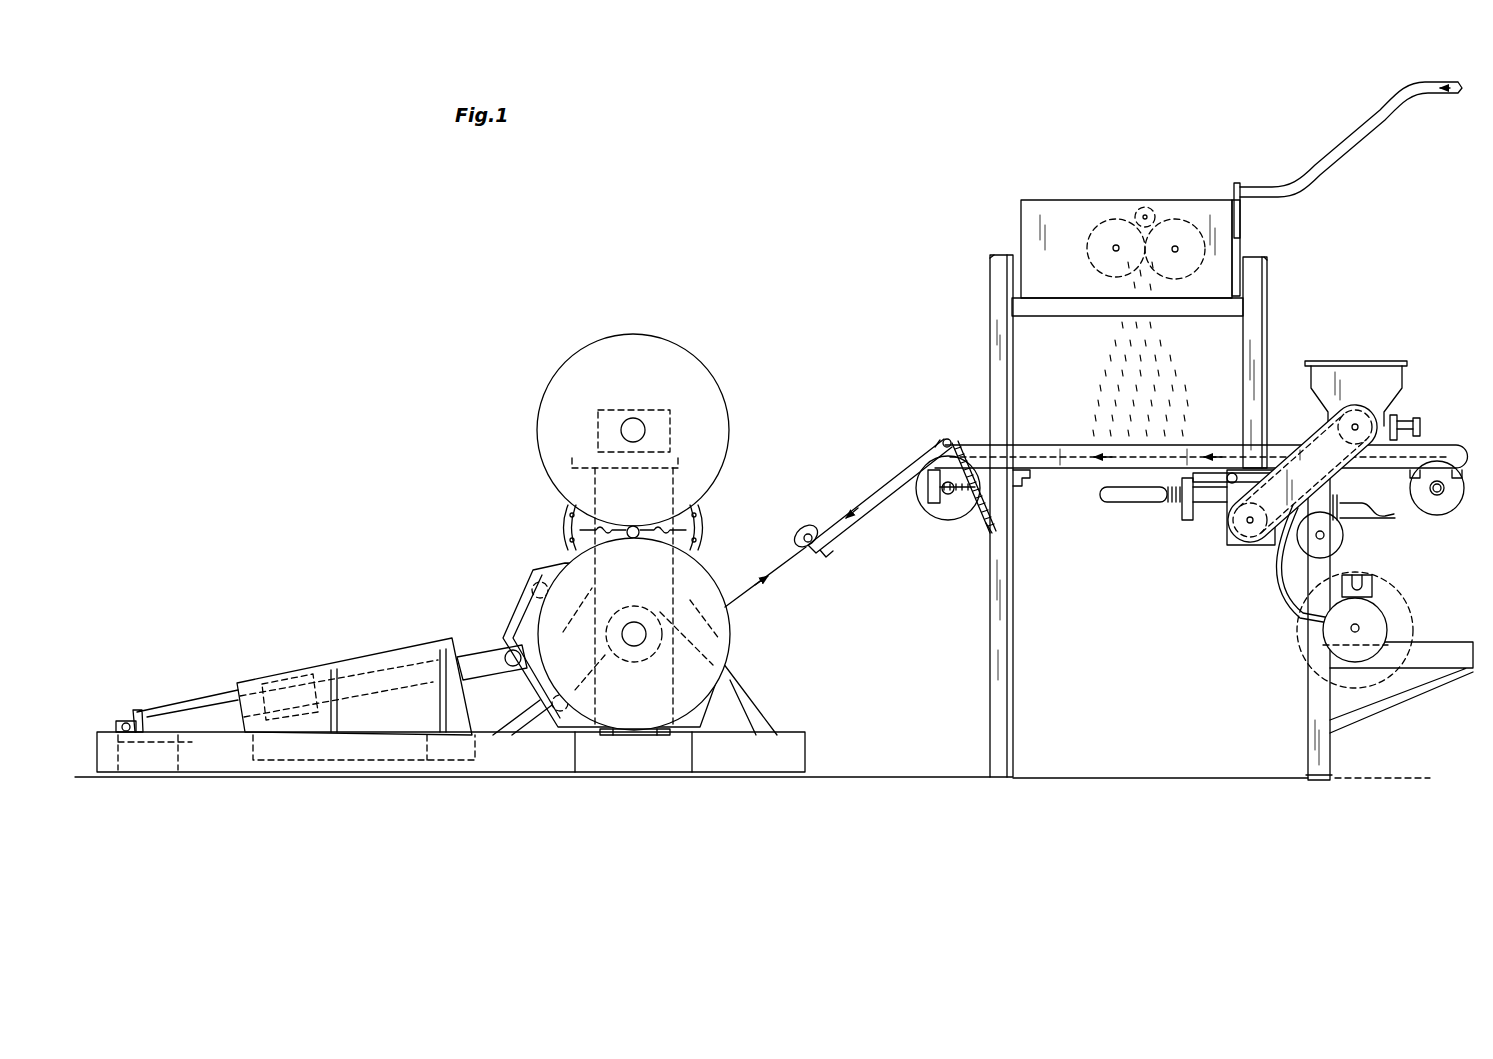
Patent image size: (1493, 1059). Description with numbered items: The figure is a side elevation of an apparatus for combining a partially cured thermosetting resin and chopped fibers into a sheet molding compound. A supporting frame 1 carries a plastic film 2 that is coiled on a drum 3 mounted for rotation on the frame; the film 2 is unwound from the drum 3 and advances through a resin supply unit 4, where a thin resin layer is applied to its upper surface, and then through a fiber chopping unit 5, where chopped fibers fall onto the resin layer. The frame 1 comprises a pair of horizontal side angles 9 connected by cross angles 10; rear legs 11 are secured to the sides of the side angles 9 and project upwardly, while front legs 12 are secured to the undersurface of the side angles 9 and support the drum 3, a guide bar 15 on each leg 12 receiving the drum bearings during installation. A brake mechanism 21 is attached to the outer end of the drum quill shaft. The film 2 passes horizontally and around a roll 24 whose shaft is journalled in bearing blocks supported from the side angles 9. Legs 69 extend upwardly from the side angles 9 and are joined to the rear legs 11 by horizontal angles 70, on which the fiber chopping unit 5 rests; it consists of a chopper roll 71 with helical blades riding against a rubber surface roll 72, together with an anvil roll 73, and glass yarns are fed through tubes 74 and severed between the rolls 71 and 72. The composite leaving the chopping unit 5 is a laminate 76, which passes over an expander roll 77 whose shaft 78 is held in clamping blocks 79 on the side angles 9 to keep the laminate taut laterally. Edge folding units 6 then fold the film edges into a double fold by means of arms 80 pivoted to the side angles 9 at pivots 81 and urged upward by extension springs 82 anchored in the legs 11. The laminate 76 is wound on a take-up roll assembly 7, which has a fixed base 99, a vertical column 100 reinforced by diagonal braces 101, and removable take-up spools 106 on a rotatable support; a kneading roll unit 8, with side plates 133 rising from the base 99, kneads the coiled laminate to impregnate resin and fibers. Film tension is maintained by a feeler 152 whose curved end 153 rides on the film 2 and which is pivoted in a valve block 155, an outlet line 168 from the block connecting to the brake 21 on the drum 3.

The frame 1 is at (988, 667).
The plastic film 2 is at (1400, 507).
The drum 3 is at (1400, 610).
The resin supply unit 4 is at (1408, 357).
The fiber chopping unit 5 is at (1247, 247).
The edge folding units 6 is at (812, 520).
The take-up roll assembly 7 is at (718, 558).
The kneading roll unit 8 is at (517, 594).
The side angles 9 is at (1046, 455).
The cross angles 10 is at (1022, 478).
The rear legs 11 is at (990, 330).
The front legs 12 is at (1308, 703).
The guide bar 15 is at (1466, 683).
The brake mechanism 21 is at (1332, 637).
The roll 24 is at (1444, 500).
The legs 69 is at (1257, 337).
The horizontal angles 70 is at (1053, 300).
The chopper roll 71 is at (1115, 232).
The rubber surface roll 72 is at (1175, 225).
The anvil roll 73 is at (1146, 207).
The tubes 74 is at (1368, 123).
The laminate 76 is at (760, 584).
The expander roll 77 is at (968, 518).
The shaft 78 is at (948, 496).
The clamping blocks 79 is at (933, 497).
The arms 80 is at (850, 546).
The pivots 81 is at (938, 445).
The extension springs 82 is at (982, 445).
The fixed base 99 is at (806, 742).
The vertical column 100 is at (672, 730).
The diagonal braces 101 is at (513, 712).
The take-up spool 106 is at (700, 380).
The side plates 133 is at (372, 664).
The feeler 152 is at (1392, 500).
The curved end 153 is at (1385, 519).
The valve block 155 is at (1335, 528).
The outlet line 168 is at (1272, 596).